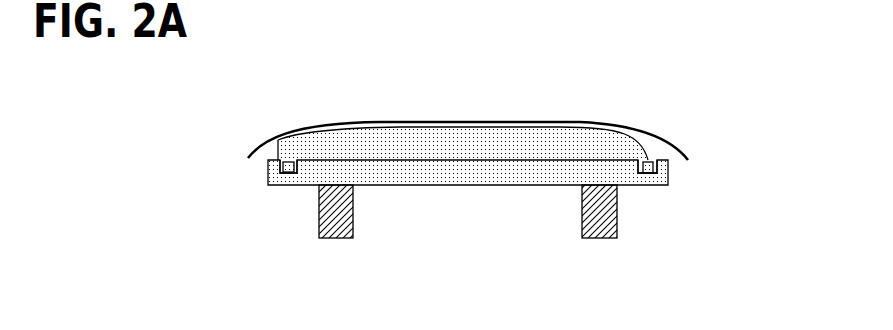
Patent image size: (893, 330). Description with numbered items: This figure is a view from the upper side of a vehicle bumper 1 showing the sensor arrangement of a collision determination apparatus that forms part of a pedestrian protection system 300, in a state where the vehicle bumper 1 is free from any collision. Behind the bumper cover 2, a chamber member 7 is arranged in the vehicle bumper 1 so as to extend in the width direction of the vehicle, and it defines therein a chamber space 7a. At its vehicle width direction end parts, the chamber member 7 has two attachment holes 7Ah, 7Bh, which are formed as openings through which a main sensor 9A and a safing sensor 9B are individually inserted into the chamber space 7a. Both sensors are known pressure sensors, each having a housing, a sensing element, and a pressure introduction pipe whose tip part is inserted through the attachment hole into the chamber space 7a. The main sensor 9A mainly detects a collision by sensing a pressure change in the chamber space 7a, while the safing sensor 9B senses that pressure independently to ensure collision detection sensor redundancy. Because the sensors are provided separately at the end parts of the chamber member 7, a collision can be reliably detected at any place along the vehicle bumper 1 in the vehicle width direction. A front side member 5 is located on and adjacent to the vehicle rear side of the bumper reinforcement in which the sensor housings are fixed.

The pedestrian protection system 300 is at (779, 59).
The vehicle bumper 1 is at (553, 103).
The bumper cover 2 is at (425, 122).
The front side member 5 is at (333, 225).
The chamber member 7 is at (370, 139).
The chamber space 7a is at (507, 146).
The attachment hole 7Ah is at (648, 162).
The attachment hole 7Bh is at (288, 162).
The main sensor 9A is at (652, 165).
The safing sensor 9B is at (284, 162).